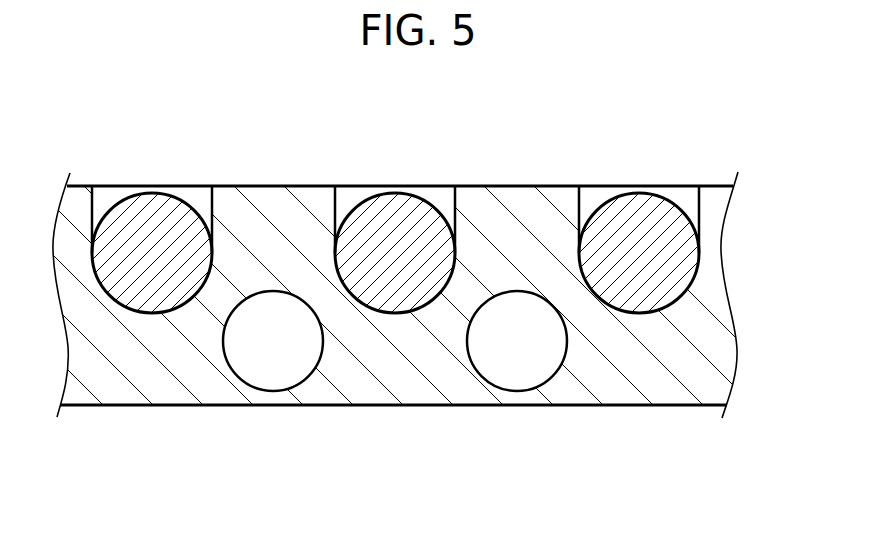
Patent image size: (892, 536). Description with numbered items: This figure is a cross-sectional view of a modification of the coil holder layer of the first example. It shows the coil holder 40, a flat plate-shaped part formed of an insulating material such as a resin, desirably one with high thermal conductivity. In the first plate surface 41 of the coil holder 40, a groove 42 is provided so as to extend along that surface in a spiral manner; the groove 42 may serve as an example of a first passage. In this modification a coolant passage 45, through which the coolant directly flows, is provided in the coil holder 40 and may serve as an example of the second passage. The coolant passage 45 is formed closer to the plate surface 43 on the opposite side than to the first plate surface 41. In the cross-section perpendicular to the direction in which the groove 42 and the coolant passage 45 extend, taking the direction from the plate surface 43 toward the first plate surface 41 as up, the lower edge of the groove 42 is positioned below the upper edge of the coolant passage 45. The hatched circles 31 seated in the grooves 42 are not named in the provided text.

The optical fiber 31 is at (638, 228).
The coil holder 40 is at (712, 292).
The first plate surface 41 is at (515, 186).
The groove 42 is at (685, 198).
The plate surface on the opposite side 43 is at (670, 405).
The coolant passage 45 is at (513, 370).